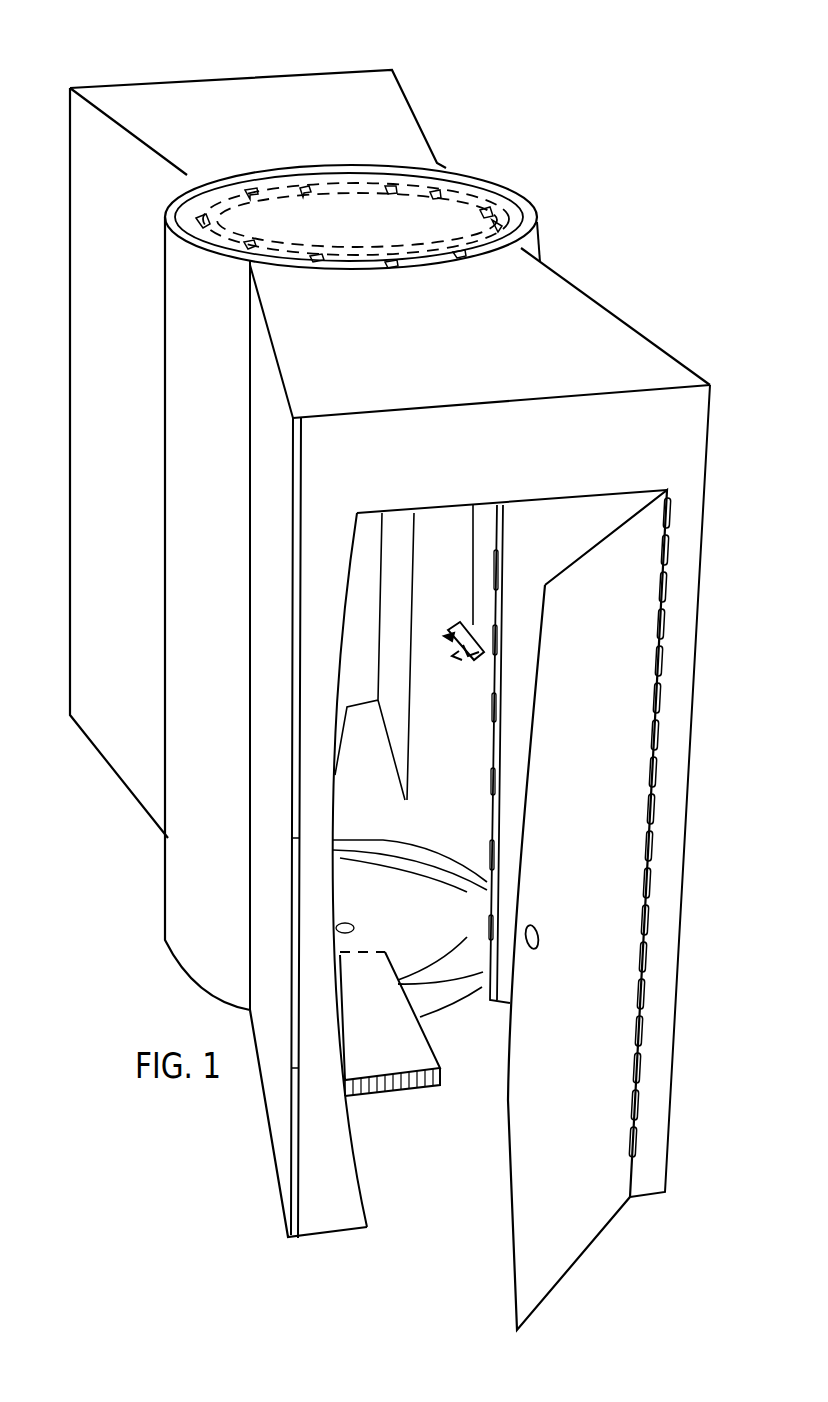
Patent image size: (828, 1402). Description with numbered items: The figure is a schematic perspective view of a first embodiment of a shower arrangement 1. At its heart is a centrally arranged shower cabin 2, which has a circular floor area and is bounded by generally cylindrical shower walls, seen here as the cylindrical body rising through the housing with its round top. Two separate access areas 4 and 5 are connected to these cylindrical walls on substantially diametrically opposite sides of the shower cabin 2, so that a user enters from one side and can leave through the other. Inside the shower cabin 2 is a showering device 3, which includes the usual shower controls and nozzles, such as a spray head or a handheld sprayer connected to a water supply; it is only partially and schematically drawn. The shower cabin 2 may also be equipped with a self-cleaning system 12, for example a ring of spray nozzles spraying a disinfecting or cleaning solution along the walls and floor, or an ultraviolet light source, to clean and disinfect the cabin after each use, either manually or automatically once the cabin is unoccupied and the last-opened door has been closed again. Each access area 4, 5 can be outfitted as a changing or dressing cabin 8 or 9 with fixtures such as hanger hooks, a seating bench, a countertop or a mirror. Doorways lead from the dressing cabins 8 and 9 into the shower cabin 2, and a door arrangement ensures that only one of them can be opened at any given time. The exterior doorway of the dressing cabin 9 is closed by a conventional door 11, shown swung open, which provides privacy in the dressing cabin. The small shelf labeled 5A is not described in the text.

The shower arrangement 1 is at (605, 73).
The shower cabin 2 is at (372, 244).
The showering device 3 is at (470, 592).
The access area 4 is at (342, 151).
The access area 5 is at (392, 362).
The shelf 5A is at (377, 1087).
The dressing cabin 8 is at (199, 100).
The dressing cabin 9 is at (667, 368).
The door 11 is at (638, 689).
The self-cleaning system 12 is at (437, 195).